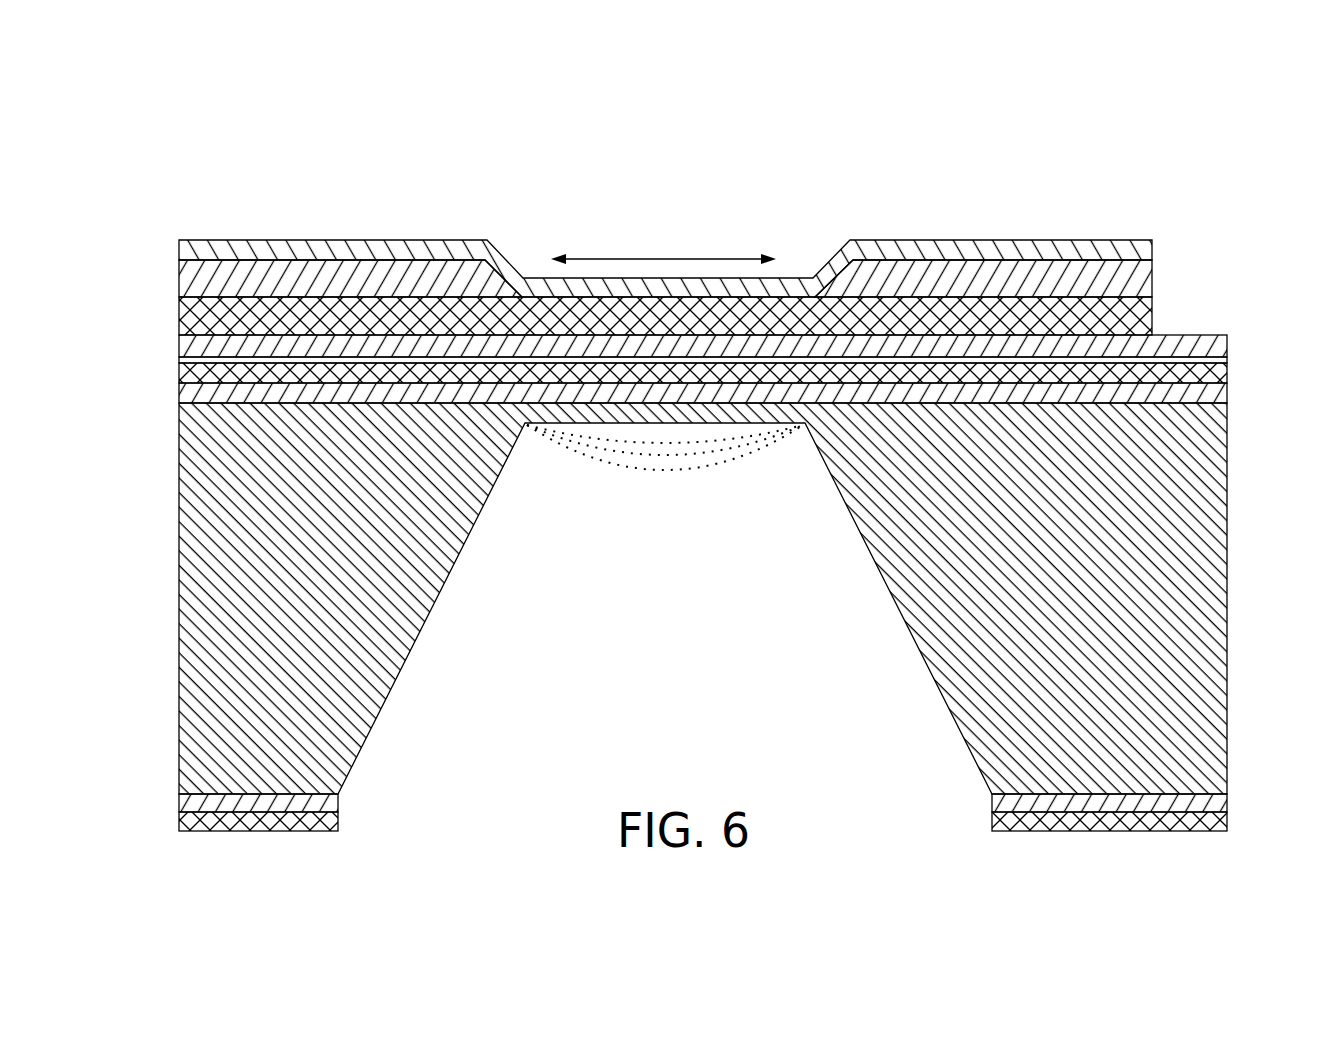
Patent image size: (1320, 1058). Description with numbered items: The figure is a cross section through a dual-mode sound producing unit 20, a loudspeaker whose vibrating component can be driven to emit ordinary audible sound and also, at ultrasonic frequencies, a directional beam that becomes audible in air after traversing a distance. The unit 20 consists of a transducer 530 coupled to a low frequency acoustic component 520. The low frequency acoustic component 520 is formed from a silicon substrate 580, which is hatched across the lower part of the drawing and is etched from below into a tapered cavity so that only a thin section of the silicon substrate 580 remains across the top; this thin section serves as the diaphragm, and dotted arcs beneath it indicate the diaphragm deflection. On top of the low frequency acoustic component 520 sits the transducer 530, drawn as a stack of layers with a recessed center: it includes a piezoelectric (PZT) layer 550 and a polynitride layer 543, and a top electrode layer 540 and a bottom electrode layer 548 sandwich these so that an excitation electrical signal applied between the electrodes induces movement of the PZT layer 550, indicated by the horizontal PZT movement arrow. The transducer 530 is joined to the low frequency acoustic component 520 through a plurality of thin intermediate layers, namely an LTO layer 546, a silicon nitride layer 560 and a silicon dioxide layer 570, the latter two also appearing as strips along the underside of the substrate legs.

The dual-mode sound producing unit 20 is at (927, 111).
The low frequency acoustic component 520 is at (653, 595).
The transducer 530 is at (685, 151).
The top electrode layer 540 is at (1018, 241).
The polynitride layer 543 is at (1153, 275).
The LTO layer 546 is at (178, 360).
The bottom electrode layer 548 is at (1228, 350).
The piezoelectric (PZT) layer 550 is at (1153, 315).
The silicon nitride layer 560 is at (178, 373).
The silicon dioxide layer 570 is at (1228, 393).
The silicon substrate 580 is at (208, 535).